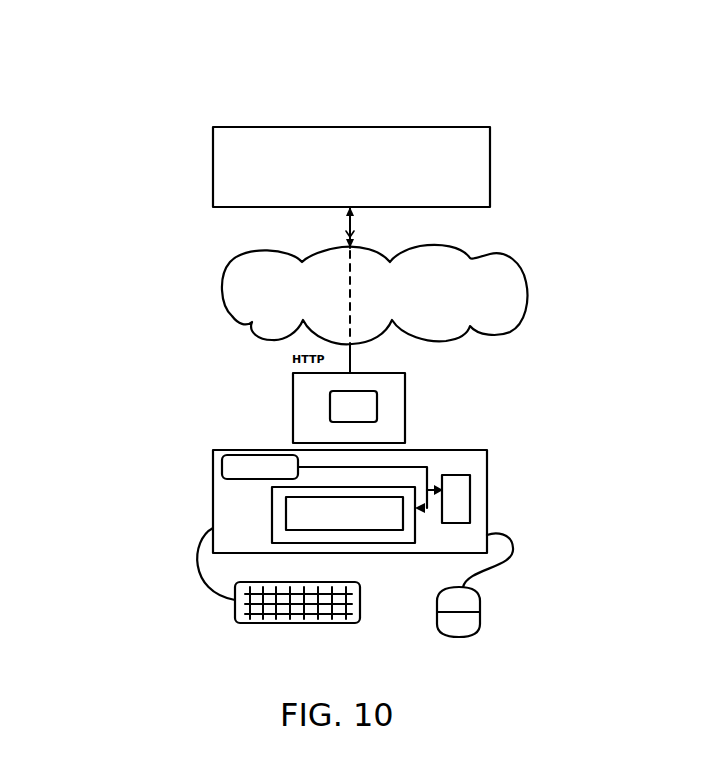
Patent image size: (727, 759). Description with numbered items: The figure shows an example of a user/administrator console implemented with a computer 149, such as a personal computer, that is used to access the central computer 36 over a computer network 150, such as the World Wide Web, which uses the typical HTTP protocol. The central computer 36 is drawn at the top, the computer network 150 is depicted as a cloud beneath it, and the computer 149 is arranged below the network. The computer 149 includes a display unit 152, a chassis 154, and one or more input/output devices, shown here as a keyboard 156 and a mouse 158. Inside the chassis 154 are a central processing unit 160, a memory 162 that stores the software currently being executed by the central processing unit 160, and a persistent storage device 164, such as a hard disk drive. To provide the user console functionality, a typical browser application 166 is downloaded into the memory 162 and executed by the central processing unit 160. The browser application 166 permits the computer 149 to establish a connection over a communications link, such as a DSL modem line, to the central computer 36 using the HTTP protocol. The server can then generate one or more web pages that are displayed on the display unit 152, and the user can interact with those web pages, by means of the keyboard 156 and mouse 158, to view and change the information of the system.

The central computer 36 is at (213, 162).
The computer network 150 is at (466, 305).
The display unit 152 is at (405, 398).
The computer 149 is at (176, 502).
The chassis 154 is at (487, 464).
The central processing unit 160 is at (250, 455).
The memory 162 is at (400, 543).
The browser application 166 is at (368, 530).
The persistent storage device 164 is at (466, 498).
The keyboard 156 is at (243, 626).
The mouse 158 is at (480, 604).